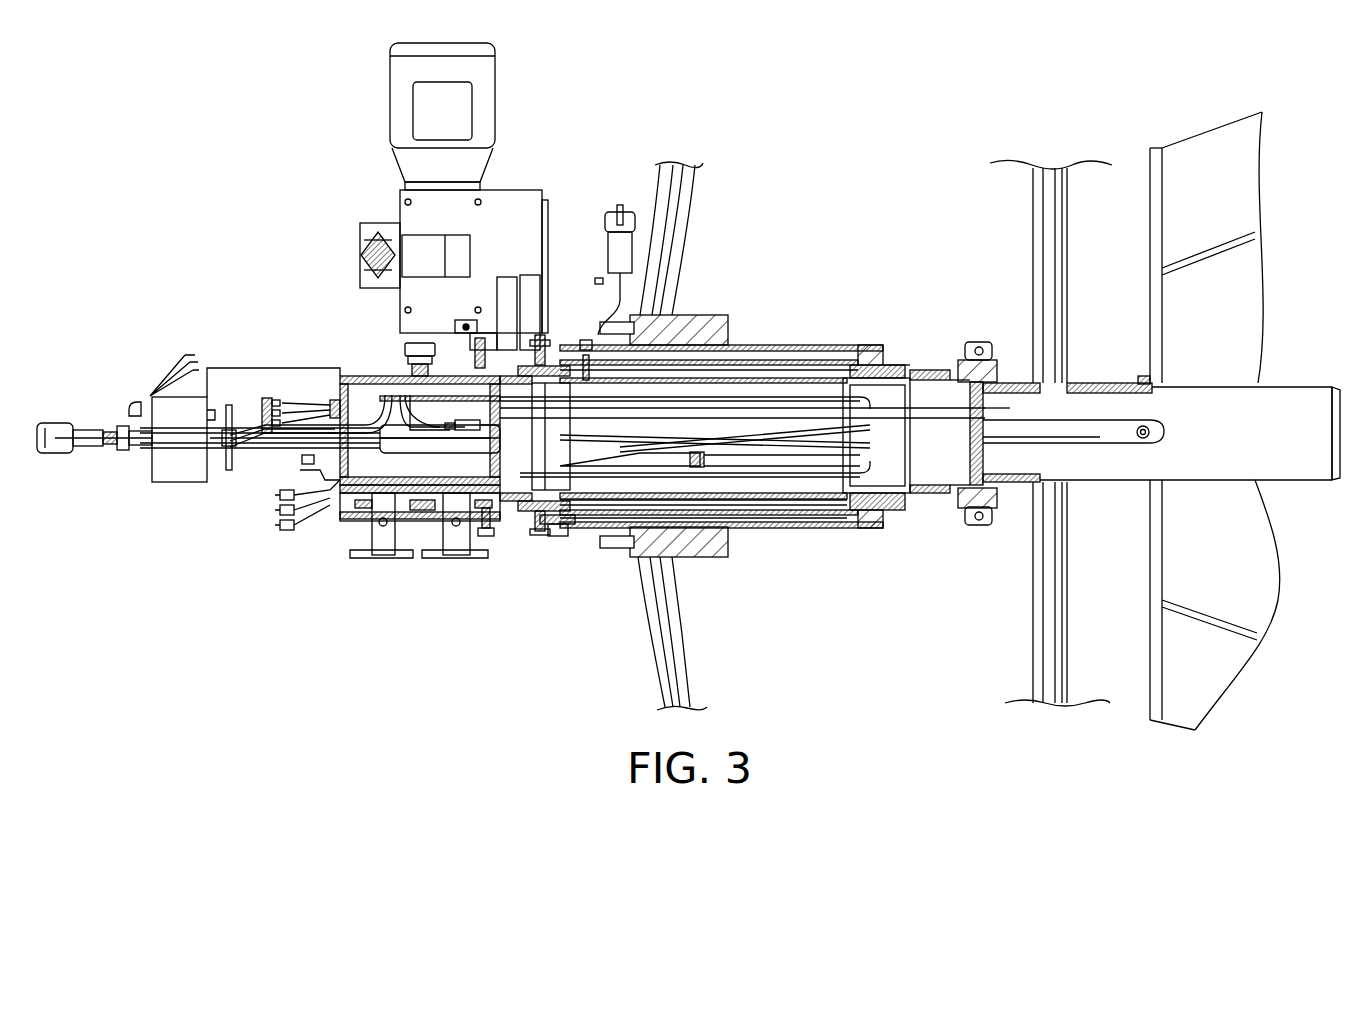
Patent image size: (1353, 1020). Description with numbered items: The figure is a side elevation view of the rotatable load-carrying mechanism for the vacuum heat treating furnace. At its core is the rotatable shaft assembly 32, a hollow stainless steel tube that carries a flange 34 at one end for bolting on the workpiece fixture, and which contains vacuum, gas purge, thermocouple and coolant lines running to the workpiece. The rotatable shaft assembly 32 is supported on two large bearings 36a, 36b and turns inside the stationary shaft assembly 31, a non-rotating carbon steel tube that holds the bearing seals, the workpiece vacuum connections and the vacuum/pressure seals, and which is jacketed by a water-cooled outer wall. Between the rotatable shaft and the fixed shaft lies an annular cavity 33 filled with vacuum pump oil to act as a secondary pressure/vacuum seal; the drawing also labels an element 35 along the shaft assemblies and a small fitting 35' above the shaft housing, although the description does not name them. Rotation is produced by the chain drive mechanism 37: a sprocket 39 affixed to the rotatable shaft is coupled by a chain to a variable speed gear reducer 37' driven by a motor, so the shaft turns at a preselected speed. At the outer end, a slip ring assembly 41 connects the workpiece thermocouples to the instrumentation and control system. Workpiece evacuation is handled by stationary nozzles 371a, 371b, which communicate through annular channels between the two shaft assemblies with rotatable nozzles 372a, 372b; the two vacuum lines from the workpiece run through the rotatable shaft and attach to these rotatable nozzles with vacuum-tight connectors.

The stationary shaft assembly 31 is at (818, 530).
The rotatable shaft assembly 32 is at (933, 358).
The annular cavity 33 is at (826, 348).
The flange 34 is at (1142, 376).
The sleeve 35 is at (721, 397).
The lubricator 35' is at (604, 275).
The bearing 36a is at (552, 538).
The bearing 36b is at (872, 522).
The chain drive mechanism 37 is at (441, 195).
The variable speed gear reducer 37' is at (433, 269).
The sprocket 39 is at (517, 350).
The slip ring assembly 41 is at (175, 478).
The stationary nozzle 371a is at (370, 560).
The stationary nozzle 371b is at (470, 562).
The rotatable nozzle 372a is at (335, 505).
The rotatable nozzle 372b is at (375, 498).